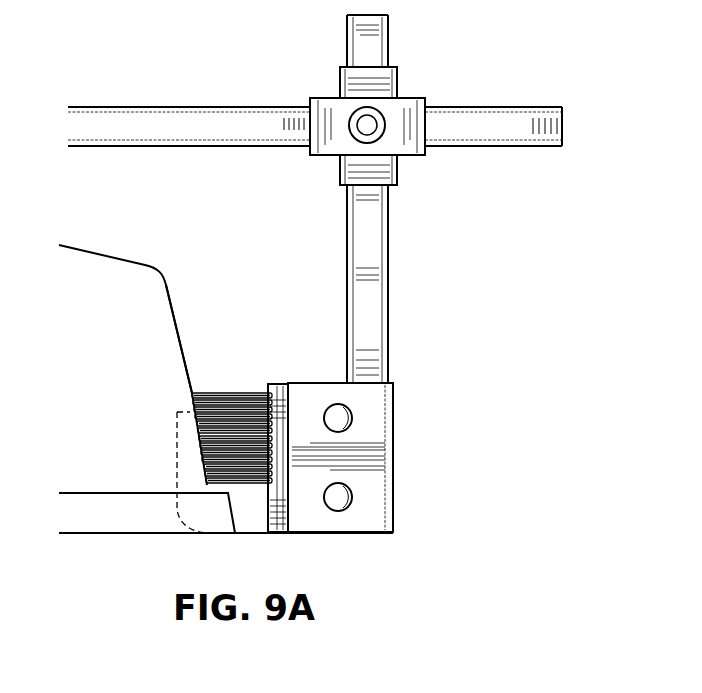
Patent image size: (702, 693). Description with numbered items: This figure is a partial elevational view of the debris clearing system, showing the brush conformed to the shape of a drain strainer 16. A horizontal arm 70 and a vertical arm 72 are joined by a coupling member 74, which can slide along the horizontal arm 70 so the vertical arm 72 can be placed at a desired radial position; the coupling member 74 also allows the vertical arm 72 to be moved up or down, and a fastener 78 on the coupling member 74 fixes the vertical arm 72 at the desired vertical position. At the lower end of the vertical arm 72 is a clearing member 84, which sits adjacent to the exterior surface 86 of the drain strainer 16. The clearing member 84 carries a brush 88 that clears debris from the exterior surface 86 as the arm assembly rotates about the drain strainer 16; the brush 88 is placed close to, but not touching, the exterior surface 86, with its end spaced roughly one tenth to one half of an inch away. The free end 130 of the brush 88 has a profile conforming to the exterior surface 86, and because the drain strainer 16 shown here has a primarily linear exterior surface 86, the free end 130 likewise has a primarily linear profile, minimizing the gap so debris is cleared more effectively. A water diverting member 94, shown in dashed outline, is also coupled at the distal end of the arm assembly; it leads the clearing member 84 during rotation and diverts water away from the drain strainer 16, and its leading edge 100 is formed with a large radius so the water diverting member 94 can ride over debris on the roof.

The drain strainer 16 is at (102, 243).
The horizontal arm 70 is at (130, 107).
The vertical arm 72 is at (388, 257).
The coupling member 74 is at (320, 97).
The fastener 78 is at (385, 125).
The clearing member 84 is at (402, 440).
The exterior surface 86 is at (174, 312).
The brush 88 is at (248, 392).
The water diverting member 94 is at (176, 432).
The base 100 is at (177, 514).
The free end 130 is at (195, 385).